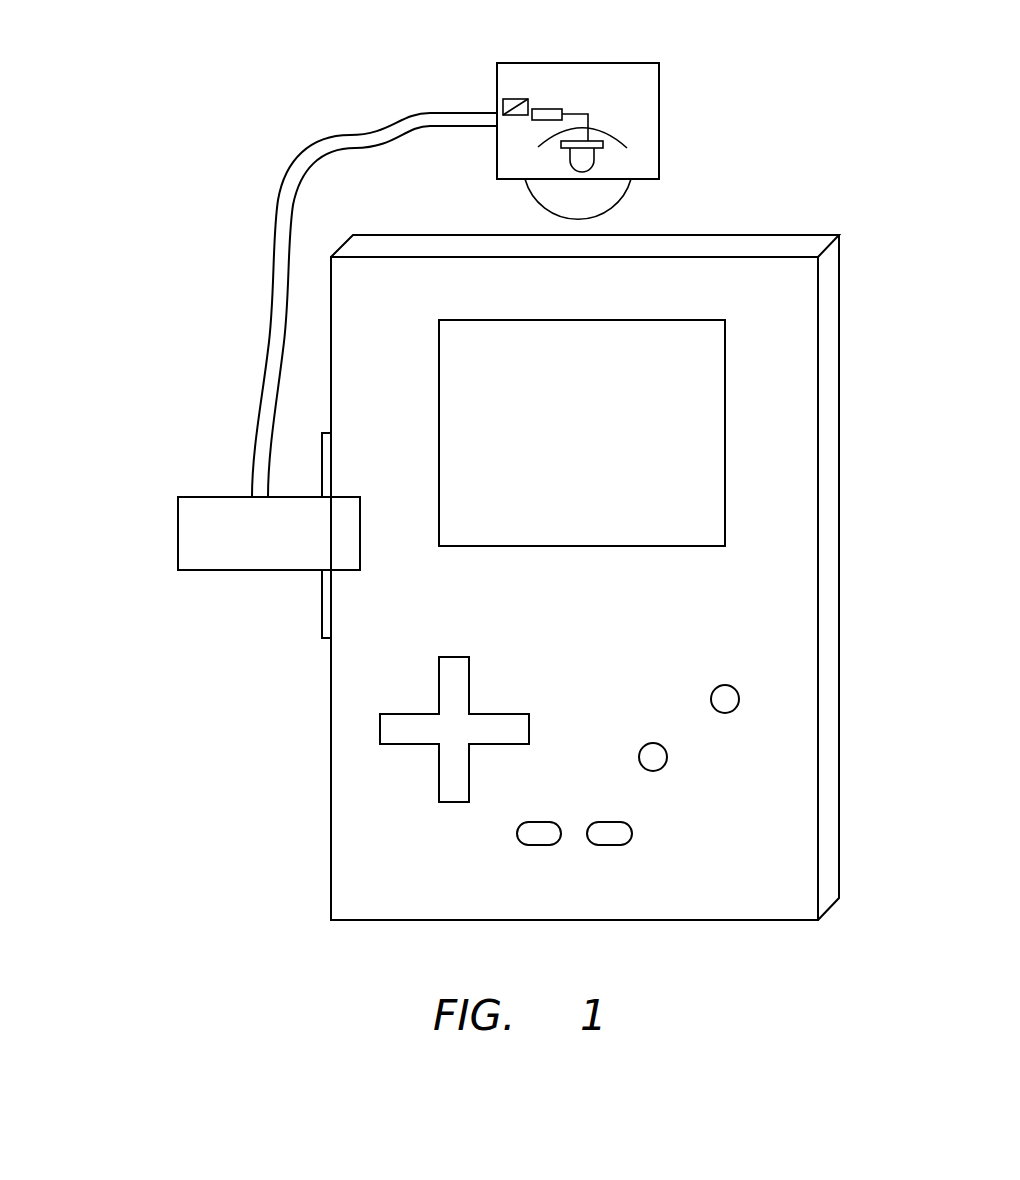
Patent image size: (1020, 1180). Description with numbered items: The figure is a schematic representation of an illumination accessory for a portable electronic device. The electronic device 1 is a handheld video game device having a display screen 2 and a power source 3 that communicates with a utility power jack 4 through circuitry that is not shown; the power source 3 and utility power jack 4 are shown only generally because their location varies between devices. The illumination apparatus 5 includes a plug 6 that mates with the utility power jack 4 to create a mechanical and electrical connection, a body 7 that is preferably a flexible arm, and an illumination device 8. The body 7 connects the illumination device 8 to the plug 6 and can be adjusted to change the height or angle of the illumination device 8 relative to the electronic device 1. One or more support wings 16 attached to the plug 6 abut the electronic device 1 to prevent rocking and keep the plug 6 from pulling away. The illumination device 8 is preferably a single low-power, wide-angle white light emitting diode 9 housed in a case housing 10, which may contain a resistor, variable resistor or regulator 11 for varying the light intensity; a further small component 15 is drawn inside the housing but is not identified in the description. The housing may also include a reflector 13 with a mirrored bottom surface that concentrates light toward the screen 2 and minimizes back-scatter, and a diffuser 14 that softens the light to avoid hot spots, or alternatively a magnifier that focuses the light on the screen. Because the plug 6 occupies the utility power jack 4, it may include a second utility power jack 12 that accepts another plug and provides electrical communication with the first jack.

The electronic device 1 is at (553, 577).
The display screen 2 is at (692, 413).
The power source 3 is at (370, 854).
The utility power jack 4 is at (364, 534).
The illumination apparatus 5 is at (268, 262).
The plug 6 is at (249, 574).
The body 7 is at (272, 312).
The illumination device 8 is at (615, 119).
The light emitting diode 9 is at (597, 152).
The case housing 10 is at (660, 85).
The resistor, variable resistor, and/or regulator 11 is at (548, 100).
The second utility power jack 12 is at (412, 347).
The reflector 13 is at (612, 133).
The diffuser 14 is at (620, 184).
The switch 15 is at (512, 98).
The support wings 16 is at (322, 447).